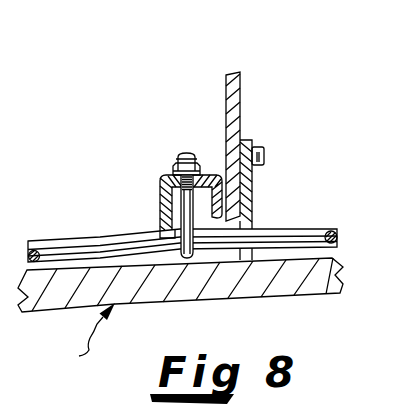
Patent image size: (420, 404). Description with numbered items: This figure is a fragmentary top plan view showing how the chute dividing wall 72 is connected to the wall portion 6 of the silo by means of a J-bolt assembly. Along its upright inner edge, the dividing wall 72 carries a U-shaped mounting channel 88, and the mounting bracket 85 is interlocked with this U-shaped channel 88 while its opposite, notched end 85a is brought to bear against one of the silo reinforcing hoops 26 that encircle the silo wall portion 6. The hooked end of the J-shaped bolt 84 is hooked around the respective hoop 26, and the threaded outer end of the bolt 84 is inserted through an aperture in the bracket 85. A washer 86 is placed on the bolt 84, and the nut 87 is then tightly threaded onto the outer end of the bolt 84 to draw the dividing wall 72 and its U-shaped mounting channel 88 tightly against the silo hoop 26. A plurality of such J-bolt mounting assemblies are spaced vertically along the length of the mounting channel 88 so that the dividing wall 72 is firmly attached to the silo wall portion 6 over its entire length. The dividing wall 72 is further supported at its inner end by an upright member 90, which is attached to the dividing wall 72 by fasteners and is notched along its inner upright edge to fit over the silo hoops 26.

The silo wall portion 6 is at (87, 338).
The silo reinforcing hoop 26 is at (316, 232).
The dividing wall 72 is at (240, 92).
The J-shaped bolt 84 is at (174, 263).
The mounting bracket 85 is at (152, 206).
The notched end 85a is at (160, 201).
The washer 86 is at (172, 171).
The nut 87 is at (177, 158).
The U-shaped mounting channel 88 is at (195, 213).
The upright member 90 is at (253, 191).